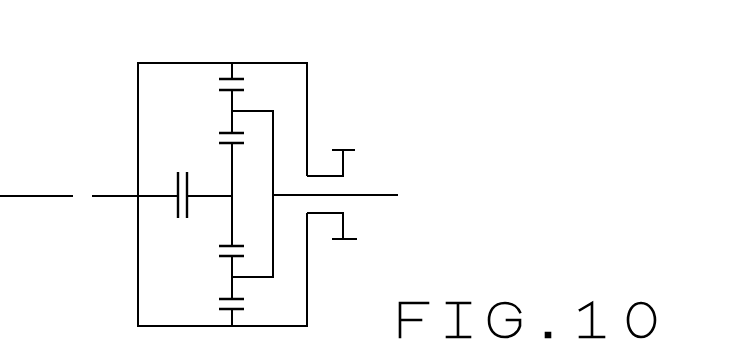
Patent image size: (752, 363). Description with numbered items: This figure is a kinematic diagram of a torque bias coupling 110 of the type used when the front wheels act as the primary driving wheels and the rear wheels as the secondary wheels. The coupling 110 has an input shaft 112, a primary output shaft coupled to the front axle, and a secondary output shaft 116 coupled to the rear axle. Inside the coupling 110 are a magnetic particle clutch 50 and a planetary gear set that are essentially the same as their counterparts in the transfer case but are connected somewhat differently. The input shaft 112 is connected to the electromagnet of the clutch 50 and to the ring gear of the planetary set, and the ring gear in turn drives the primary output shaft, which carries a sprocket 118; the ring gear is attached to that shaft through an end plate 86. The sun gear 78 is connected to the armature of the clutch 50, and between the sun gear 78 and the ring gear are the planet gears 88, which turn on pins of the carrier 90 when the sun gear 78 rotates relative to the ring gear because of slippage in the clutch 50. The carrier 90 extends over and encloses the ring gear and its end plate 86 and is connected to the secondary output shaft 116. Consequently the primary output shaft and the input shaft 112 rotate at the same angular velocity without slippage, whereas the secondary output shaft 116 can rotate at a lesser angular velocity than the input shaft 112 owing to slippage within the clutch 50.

The magnetic particle clutch 50 is at (178, 170).
The sun gear 78 is at (232, 214).
The end plate 86 is at (232, 73).
The planet gears 88 is at (232, 104).
The carrier 90 is at (273, 126).
The torque bias coupling 110 is at (382, 92).
The input shaft 112 is at (111, 196).
The secondary output shaft 116 is at (385, 196).
The sprocket 118 is at (347, 149).